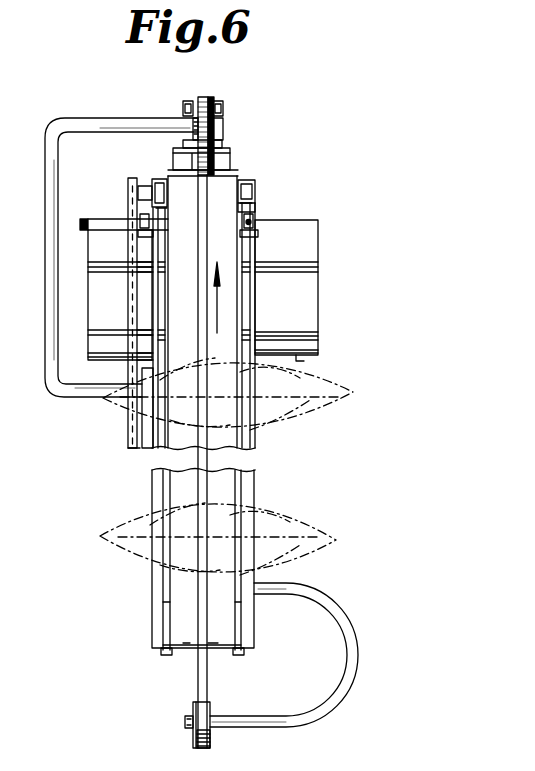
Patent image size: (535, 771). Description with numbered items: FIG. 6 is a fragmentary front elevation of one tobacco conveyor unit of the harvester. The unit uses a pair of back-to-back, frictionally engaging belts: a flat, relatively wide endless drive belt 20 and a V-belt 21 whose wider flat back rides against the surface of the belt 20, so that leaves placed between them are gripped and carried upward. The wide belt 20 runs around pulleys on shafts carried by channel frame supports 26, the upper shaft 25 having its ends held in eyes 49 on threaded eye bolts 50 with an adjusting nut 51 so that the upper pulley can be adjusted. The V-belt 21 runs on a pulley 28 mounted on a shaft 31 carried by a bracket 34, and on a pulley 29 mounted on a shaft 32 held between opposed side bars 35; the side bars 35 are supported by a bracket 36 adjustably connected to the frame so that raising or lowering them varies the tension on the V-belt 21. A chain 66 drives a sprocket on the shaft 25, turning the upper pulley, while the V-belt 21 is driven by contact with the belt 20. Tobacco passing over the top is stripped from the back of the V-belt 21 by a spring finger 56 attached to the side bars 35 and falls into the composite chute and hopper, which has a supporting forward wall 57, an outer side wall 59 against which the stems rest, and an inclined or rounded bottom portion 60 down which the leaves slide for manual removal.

The conveyor belt 20 is at (228, 287).
The V-belt 21 is at (201, 95).
The shaft 25 is at (146, 182).
The channel frame supports 26 is at (252, 317).
The pulley 28 is at (210, 742).
The pulley 29 is at (212, 98).
The shaft 31 is at (185, 722).
The shaft 32 is at (214, 122).
The bracket 34 is at (355, 637).
The opposed bars 35 is at (219, 109).
The bracket 36 is at (48, 327).
The eyes 49 is at (252, 183).
The threaded eye bolts 50 is at (250, 223).
The adjusting nut 51 is at (258, 233).
The spring finger 56 is at (228, 158).
The forward wall 57 is at (312, 248).
The outer side wall 59 is at (88, 283).
The bottom portion 60 is at (302, 363).
The chain 66 is at (128, 415).